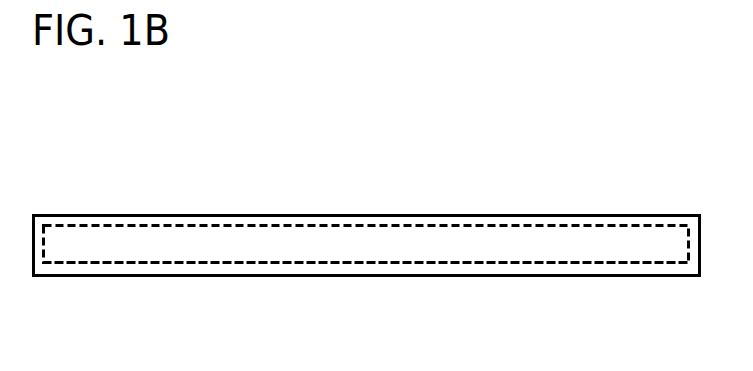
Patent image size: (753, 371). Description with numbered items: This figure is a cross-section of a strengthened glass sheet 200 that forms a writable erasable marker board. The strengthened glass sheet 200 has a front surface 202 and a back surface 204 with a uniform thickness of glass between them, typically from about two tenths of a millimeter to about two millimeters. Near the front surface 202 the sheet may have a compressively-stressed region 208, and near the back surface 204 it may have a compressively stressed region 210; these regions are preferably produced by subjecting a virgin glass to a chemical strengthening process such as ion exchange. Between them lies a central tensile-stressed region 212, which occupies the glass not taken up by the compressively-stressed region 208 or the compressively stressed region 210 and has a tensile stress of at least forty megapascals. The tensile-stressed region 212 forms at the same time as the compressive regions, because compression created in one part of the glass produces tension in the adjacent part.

The strengthened glass sheet 200 is at (63, 155).
The front surface 202 is at (323, 213).
The back surface 204 is at (317, 278).
The compressively-stressed region 208 is at (495, 220).
The compressively stressed region 210 is at (428, 272).
The central tensile-stressed region 212 is at (603, 244).